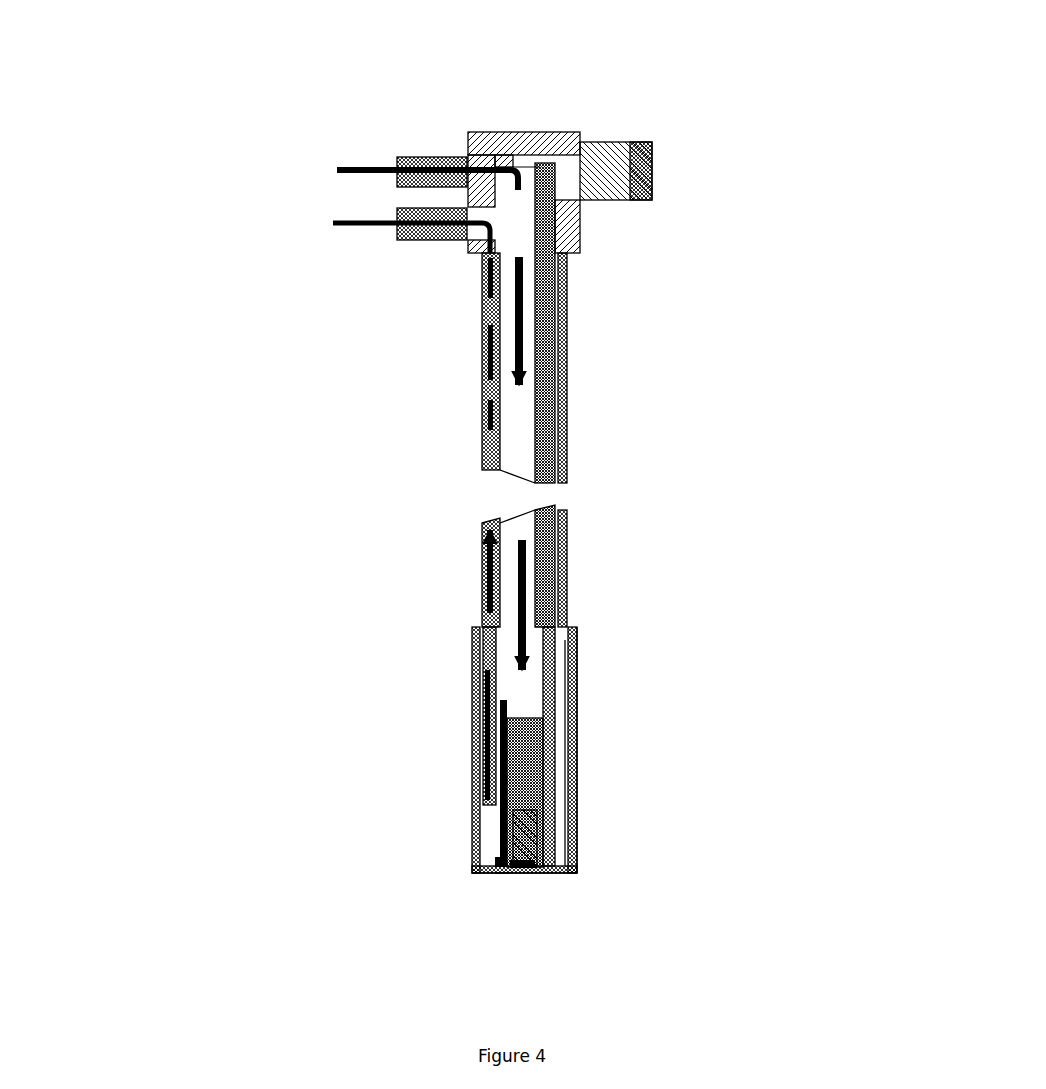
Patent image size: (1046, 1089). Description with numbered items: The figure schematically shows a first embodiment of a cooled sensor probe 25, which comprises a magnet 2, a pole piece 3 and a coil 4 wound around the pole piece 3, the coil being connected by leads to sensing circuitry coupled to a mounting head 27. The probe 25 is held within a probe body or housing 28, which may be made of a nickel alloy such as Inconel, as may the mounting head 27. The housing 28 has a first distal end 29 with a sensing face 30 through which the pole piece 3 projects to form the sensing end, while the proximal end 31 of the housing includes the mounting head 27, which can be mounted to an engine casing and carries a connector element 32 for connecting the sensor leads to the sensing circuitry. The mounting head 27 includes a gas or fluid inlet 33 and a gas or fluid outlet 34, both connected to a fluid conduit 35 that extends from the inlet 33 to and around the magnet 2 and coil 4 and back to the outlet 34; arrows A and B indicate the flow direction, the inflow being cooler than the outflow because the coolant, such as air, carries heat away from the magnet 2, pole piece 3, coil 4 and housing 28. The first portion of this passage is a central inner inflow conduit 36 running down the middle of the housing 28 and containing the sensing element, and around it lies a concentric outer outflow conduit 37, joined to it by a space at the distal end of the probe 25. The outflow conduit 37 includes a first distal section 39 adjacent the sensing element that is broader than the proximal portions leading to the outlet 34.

The magnet 2 is at (535, 757).
The pole piece 3 is at (530, 874).
The coil 4 is at (545, 835).
The sensor probe 25 is at (387, 635).
The mounting head 27 is at (552, 130).
The probe body or housing 28 is at (565, 430).
The first distal end 29 is at (430, 888).
The sensing face 30 is at (487, 893).
The proximal end 31 is at (388, 284).
The connector element 32 is at (650, 202).
The gas or fluid inlet 33 is at (430, 157).
The gas or fluid outlet 34 is at (430, 240).
The fluid conduit 35 is at (493, 444).
The inner inflow conduit 36 is at (490, 291).
The outer outflow conduit 37 is at (575, 712).
The first distal section 39 is at (566, 676).